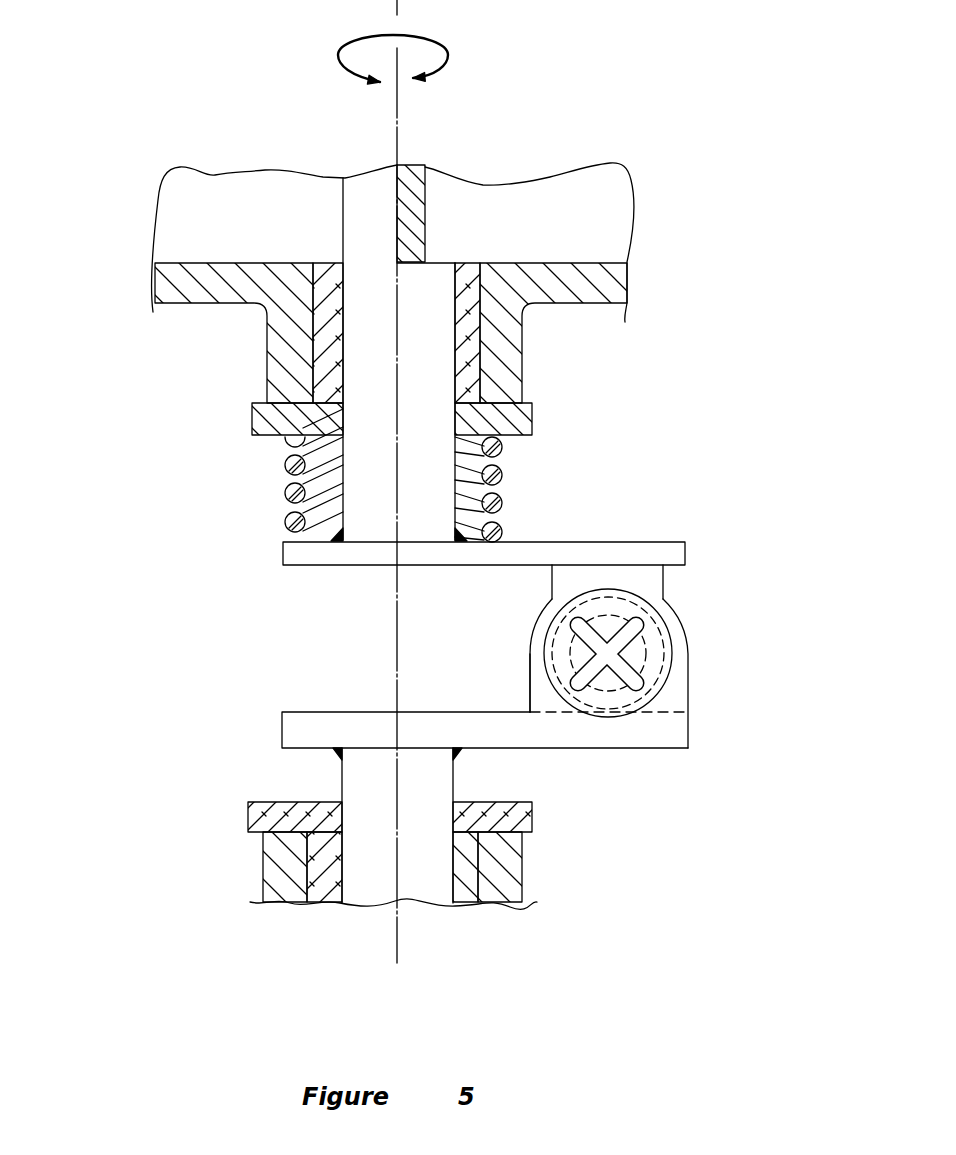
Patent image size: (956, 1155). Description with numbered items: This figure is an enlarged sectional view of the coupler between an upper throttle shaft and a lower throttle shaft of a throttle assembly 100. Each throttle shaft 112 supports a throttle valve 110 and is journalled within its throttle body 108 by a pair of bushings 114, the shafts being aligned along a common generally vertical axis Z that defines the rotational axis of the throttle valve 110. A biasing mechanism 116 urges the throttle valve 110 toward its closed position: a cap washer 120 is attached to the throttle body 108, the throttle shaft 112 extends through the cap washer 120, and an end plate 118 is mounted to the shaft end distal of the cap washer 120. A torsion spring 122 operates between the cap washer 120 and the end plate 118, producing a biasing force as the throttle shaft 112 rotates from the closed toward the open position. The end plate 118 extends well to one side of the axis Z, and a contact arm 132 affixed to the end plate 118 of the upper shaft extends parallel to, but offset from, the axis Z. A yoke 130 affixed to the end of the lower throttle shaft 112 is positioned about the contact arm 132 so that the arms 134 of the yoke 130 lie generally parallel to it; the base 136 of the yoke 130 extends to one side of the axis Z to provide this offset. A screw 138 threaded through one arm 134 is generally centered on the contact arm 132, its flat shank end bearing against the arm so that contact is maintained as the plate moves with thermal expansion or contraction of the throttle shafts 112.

The frame / housing structure 100 is at (528, 356).
The throttle body 108 is at (217, 293).
The throttle valve 110 is at (418, 225).
The throttle shaft 112 is at (365, 207).
The bushings 114 is at (468, 298).
The biasing mechanism 116 is at (379, 475).
The end plate 118 is at (643, 548).
The cap washer 120 is at (522, 425).
The torsion spring 122 is at (495, 480).
The yoke 130 is at (691, 648).
The contact arm 132 is at (652, 577).
The arms 134 is at (537, 693).
The base 136 is at (670, 735).
The screw 138 is at (663, 683).
The axis Z is at (400, 943).